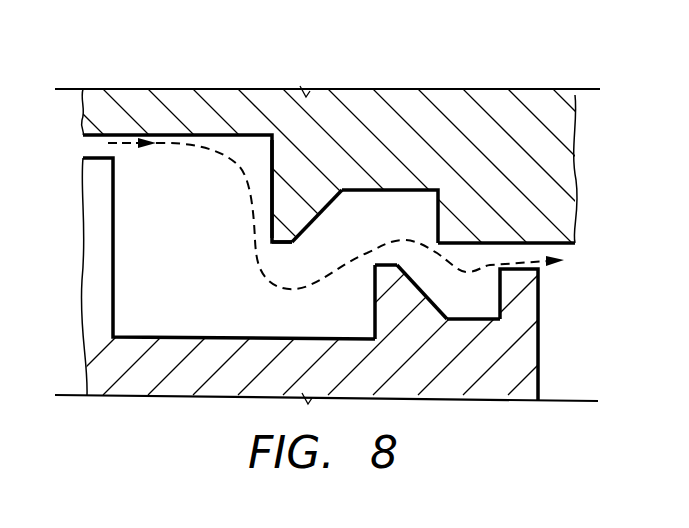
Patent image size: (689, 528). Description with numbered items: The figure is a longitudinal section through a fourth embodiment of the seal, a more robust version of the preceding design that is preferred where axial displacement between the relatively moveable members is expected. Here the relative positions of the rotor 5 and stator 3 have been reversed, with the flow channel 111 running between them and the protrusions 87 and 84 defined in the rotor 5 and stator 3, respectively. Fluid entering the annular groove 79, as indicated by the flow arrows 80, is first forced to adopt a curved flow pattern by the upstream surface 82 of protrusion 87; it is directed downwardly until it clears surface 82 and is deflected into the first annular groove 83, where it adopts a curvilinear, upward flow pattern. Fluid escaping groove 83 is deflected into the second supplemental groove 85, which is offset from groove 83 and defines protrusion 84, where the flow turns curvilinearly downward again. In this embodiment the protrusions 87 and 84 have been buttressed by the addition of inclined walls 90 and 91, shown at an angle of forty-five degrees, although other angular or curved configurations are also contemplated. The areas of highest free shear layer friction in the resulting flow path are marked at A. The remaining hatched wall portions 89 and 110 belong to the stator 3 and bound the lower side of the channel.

The stator 3 is at (372, 303).
The rotor 5 is at (363, 187).
The annular groove 79 is at (199, 265).
The flow arrows 80 is at (160, 146).
The upstream surface 82 is at (272, 168).
The first annular groove 83 is at (396, 222).
The protrusion 84 is at (375, 290).
The second supplemental groove 85 is at (472, 314).
The protrusion 87 is at (284, 243).
The projection 89 is at (416, 327).
The inclined wall 90 is at (312, 224).
The inclined wall 91 is at (413, 281).
The rim wall 110 is at (522, 283).
The flow channel 111 is at (527, 250).
The areas of highest free shear layer friction A is at (212, 151).